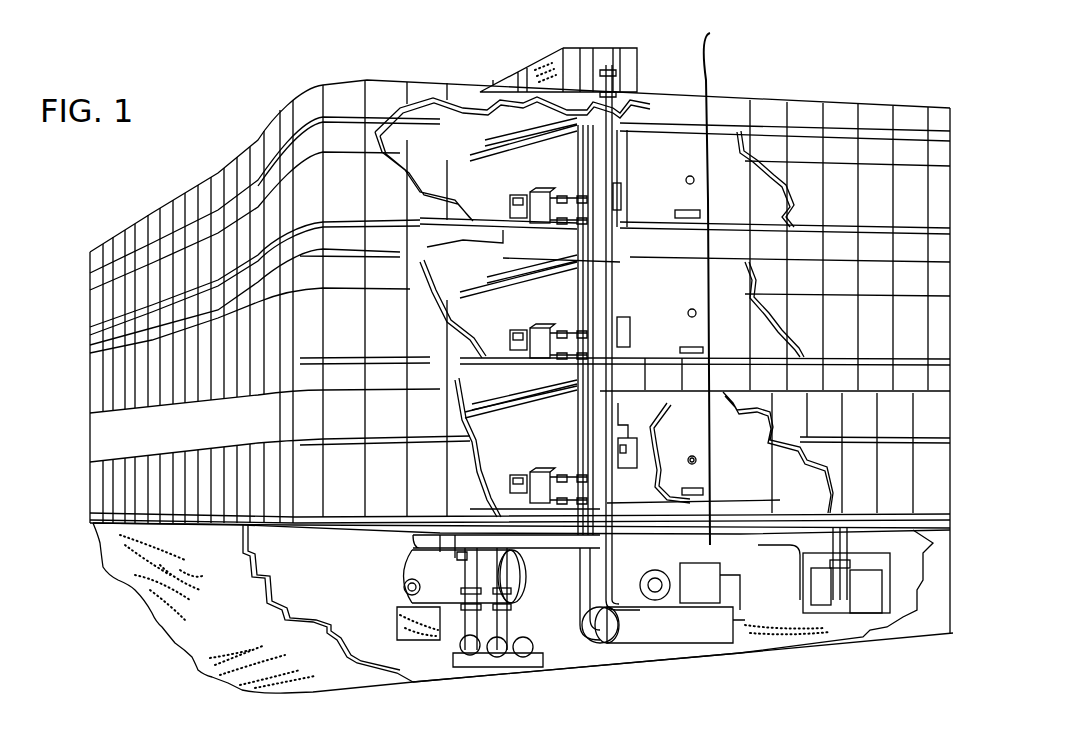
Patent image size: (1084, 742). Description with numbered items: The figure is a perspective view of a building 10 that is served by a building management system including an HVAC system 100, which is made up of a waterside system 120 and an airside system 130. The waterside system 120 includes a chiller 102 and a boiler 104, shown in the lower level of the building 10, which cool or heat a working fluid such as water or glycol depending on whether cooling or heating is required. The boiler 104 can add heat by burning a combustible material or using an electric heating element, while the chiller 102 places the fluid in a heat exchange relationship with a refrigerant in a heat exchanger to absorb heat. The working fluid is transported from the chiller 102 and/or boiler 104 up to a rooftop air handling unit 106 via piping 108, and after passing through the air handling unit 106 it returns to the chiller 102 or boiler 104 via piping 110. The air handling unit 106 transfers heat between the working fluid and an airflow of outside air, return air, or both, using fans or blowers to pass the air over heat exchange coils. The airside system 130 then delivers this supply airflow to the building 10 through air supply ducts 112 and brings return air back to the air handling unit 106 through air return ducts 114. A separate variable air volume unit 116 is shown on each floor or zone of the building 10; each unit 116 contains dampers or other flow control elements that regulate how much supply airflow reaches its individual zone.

The building 10 is at (206, 126).
The HVAC system 100 is at (752, 658).
The chiller 102 is at (677, 625).
The boiler 104 is at (410, 573).
The rooftop air handling unit 106 is at (627, 83).
The piping 108 is at (562, 51).
The piping 110 is at (614, 67).
The air supply ducts 112 is at (580, 140).
The air return ducts 114 is at (512, 200).
The variable air volume unit 116 is at (547, 198).
The waterside system 120 is at (742, 590).
The airside system 130 is at (714, 282).